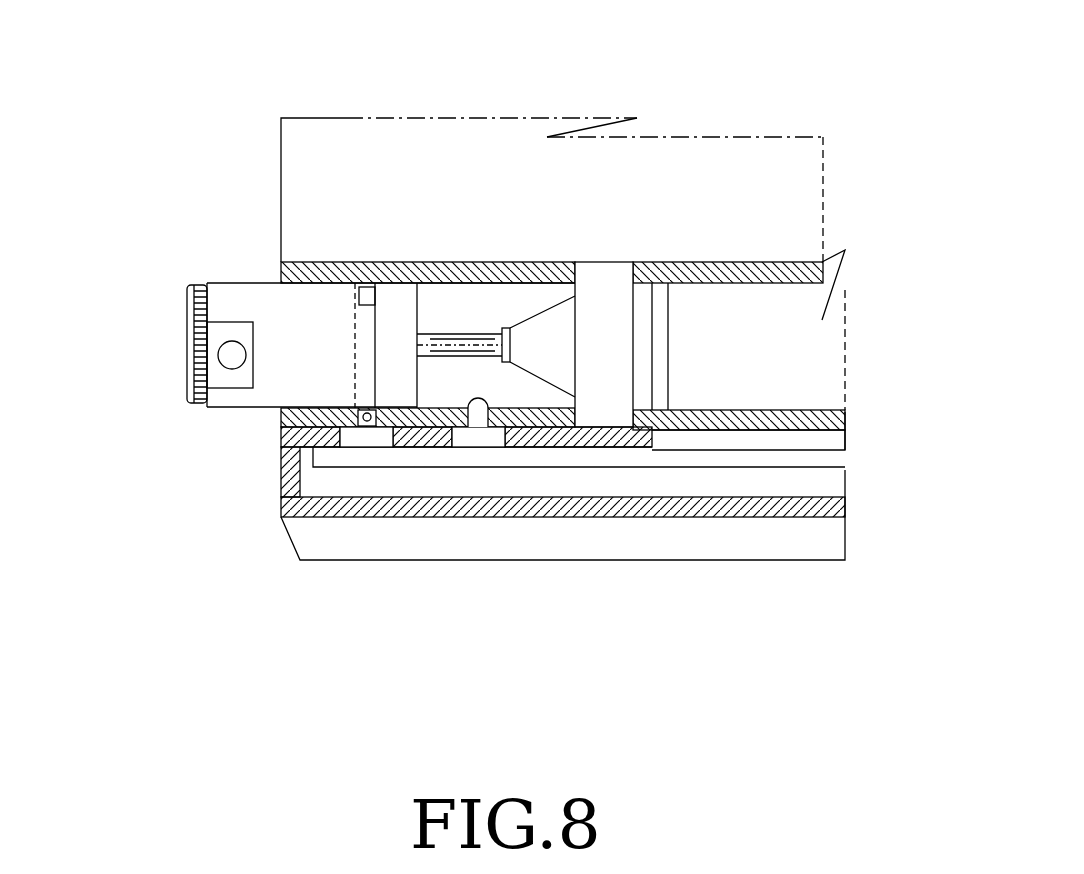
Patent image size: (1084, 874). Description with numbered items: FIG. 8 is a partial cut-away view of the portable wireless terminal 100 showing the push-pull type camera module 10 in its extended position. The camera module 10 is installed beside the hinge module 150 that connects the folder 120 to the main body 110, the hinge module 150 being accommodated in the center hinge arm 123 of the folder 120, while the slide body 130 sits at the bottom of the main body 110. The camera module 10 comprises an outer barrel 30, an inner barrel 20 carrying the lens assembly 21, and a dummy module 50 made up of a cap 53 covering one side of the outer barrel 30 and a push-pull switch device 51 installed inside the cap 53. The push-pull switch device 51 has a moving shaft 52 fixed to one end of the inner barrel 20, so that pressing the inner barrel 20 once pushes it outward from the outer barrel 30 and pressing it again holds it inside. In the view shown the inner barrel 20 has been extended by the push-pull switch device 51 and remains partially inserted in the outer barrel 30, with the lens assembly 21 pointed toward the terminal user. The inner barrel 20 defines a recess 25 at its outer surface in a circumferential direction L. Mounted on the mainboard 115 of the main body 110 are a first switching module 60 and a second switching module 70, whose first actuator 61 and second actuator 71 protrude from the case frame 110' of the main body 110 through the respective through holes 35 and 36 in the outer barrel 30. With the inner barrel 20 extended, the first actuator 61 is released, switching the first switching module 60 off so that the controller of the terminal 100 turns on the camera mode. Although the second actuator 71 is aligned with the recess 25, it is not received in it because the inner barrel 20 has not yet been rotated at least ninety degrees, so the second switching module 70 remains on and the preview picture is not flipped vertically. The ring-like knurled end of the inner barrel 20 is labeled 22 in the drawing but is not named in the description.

The portable wireless terminal 100 is at (238, 205).
The circumferential direction L is at (358, 327).
The push-pull type camera module 10 is at (173, 400).
The inner barrel 20 is at (185, 305).
The lens assembly 21 is at (232, 356).
The knurled ring 22 is at (187, 378).
The recess 25 is at (370, 285).
The outer barrel 30 is at (484, 256).
The through hole 35 is at (530, 445).
The through hole 36 is at (282, 425).
The dummy module 50 is at (605, 257).
The push-pull switch device 51 is at (547, 308).
The moving shaft 52 is at (487, 332).
The cap 53 is at (627, 262).
The first switching module 60 is at (493, 438).
The first actuator 61 is at (448, 447).
The second switching module 70 is at (357, 438).
The second actuator 71 is at (282, 510).
The main body 110 is at (398, 474).
The case frame 110' is at (595, 546).
The mainboard 115 is at (845, 474).
The folder 120 is at (348, 128).
The center hinge arm 123 is at (785, 262).
The slide body 130 is at (299, 559).
The hinge module 150 is at (765, 370).